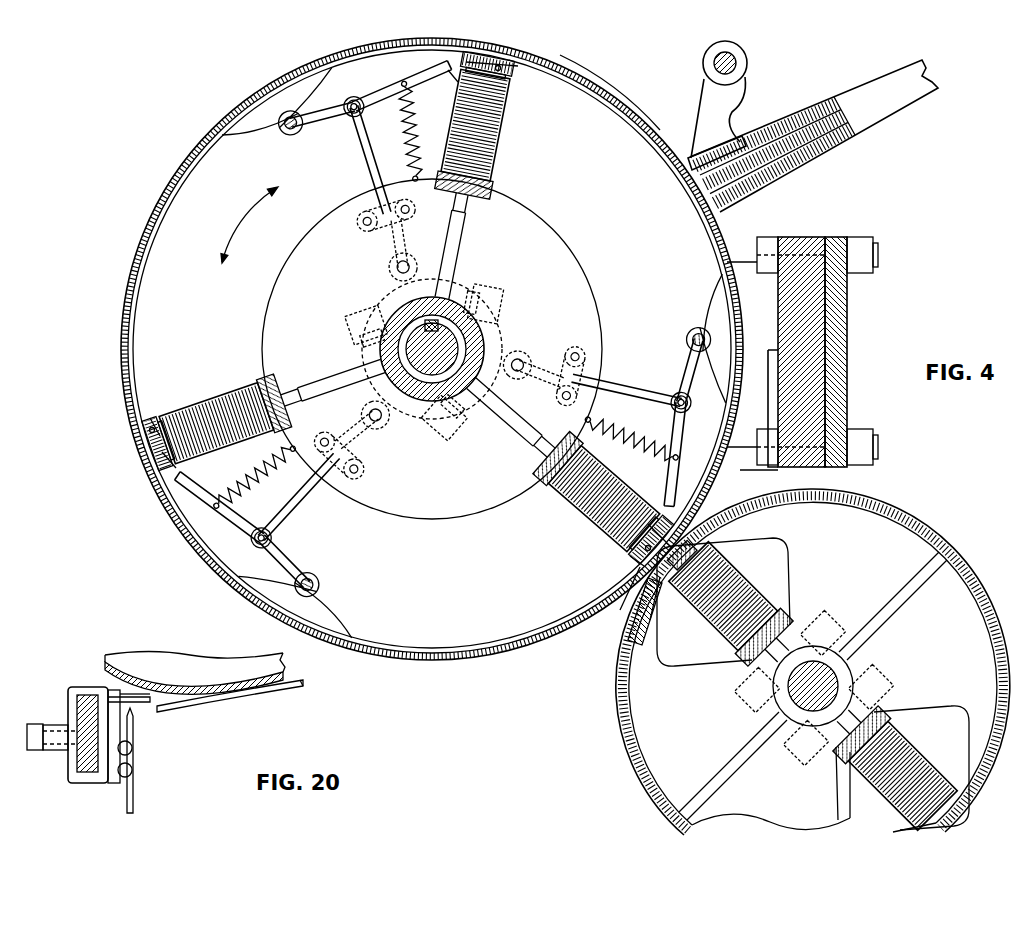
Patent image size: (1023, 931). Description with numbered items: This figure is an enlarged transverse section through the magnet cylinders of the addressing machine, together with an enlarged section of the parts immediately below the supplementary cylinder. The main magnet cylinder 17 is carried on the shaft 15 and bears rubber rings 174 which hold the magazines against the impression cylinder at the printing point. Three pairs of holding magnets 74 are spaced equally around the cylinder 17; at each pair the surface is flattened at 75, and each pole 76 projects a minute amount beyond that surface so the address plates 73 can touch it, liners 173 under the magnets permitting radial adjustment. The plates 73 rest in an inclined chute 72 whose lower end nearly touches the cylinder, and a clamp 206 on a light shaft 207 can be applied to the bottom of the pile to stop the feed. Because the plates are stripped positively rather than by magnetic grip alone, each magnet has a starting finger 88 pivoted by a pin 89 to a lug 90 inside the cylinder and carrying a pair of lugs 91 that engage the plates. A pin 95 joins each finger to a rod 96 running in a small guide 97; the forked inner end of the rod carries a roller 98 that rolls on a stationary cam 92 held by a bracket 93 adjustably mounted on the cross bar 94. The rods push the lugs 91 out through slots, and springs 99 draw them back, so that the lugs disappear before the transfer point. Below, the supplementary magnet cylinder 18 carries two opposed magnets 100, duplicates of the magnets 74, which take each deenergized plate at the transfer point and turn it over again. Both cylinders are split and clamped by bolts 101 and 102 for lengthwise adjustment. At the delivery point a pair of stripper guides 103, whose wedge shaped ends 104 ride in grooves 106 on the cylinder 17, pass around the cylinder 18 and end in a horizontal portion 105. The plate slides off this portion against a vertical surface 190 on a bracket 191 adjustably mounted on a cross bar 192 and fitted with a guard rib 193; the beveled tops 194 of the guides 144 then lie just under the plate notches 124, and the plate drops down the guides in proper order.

In FIG. 4, the shaft 15 is at (445, 320).
In FIG. 4, the main magnet cylinder 17 is at (432, 377).
In FIG. 4, the supplementary magnet cylinder 18 is at (813, 685).
In FIG. 20, the supplementary magnet cylinder 18 is at (195, 665).
In FIG. 4, the inclined chute 72 is at (906, 108).
In FIG. 4, the address plate 73 is at (765, 130).
In FIG. 20, the address plate 73 is at (127, 693).
In FIG. 4, the holding magnet 74 is at (496, 135).
In FIG. 4, the flattened surface 75 is at (530, 62).
In FIG. 4, the pole 76 is at (455, 80).
In FIG. 4, the starting finger 88 is at (340, 78).
In FIG. 4, the pin 89 is at (287, 137).
In FIG. 4, the lug 90 is at (262, 118).
In FIG. 4, the lug 91 is at (522, 78).
In FIG. 4, the stationary cam 92 is at (458, 414).
In FIG. 4, the bracket 93 is at (752, 366).
In FIG. 4, the cross bar 94 is at (830, 327).
In FIG. 4, the pin 95 is at (345, 118).
In FIG. 4, the rod 96 is at (378, 176).
In FIG. 4, the guide 97 is at (365, 228).
In FIG. 4, the roller 98 is at (388, 268).
In FIG. 4, the spring 99 is at (409, 133).
In FIG. 4, the magnet 100 is at (740, 625).
In FIG. 4, the clamp bolt 101 is at (500, 292).
In FIG. 4, the clamp bolt 102 is at (826, 620).
In FIG. 4, the stripper guide 103 is at (935, 525).
In FIG. 20, the stripper guide 103 is at (262, 690).
In FIG. 4, the wedge shaped end 104 is at (695, 548).
In FIG. 20, the horizontal portion 105 is at (170, 705).
In FIG. 4, the groove 106 is at (620, 95).
In FIG. 20, the notch 124 is at (150, 690).
In FIG. 20, the guide 144 is at (134, 797).
In FIG. 4, the liner 173 is at (493, 183).
In FIG. 4, the rubber ring 174 is at (123, 326).
In FIG. 20, the vertical surface 190 is at (100, 690).
In FIG. 20, the bracket 191 is at (90, 782).
In FIG. 20, the cross bar 192 is at (77, 765).
In FIG. 20, the guard rib 193 is at (110, 695).
In FIG. 20, the beveled end 194 is at (133, 748).
In FIG. 4, the clamp 206 is at (700, 105).
In FIG. 4, the shaft 207 is at (748, 63).